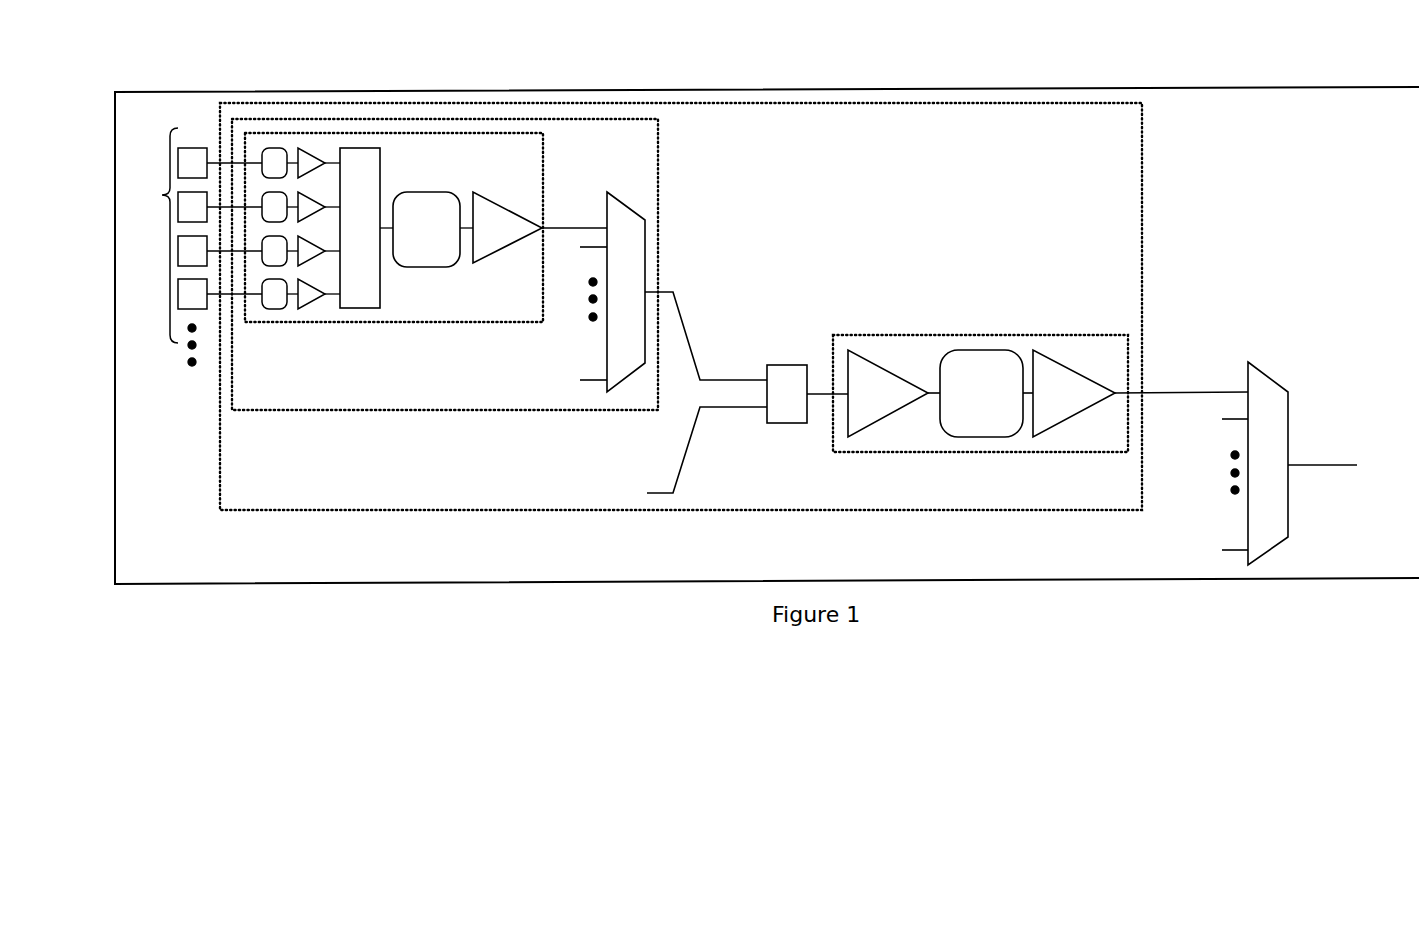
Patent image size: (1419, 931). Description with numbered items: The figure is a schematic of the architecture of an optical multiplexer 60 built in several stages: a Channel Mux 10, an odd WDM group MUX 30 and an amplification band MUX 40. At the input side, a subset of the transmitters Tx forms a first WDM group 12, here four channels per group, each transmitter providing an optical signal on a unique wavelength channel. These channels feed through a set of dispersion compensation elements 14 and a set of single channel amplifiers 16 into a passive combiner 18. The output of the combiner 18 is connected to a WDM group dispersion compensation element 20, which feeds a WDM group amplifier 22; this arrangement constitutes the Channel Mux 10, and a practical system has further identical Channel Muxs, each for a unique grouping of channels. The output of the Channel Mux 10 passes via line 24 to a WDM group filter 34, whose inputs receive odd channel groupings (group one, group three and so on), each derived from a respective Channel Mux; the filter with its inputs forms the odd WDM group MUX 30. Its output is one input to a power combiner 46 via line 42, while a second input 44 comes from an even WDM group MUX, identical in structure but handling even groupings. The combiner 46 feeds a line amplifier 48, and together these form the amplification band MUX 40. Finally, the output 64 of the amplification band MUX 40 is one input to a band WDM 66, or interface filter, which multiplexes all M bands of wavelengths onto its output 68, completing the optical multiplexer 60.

The Channel Mux 10 is at (541, 158).
The first WDM group 12 is at (154, 206).
The dispersion compensation elements 14 is at (262, 283).
The single channel amplifiers 16 is at (325, 294).
The passive combiner 18 is at (411, 173).
The WDM group dispersion compensation element 20 is at (464, 181).
The WDM group amplifier 22 is at (490, 257).
The line 24 is at (584, 213).
The odd WDM group MUX 30 is at (264, 400).
The WDM group filter 34 is at (646, 191).
The amplification band MUX 40 is at (248, 500).
The line 42 is at (713, 313).
The second input 44 is at (688, 440).
The power combiner 46 is at (821, 353).
The line amplifier 48 is at (912, 335).
The optical multiplexer 60 is at (1415, 125).
The output 64 is at (1184, 380).
The band WDM 66 is at (1299, 368).
The output 68 is at (1338, 450).